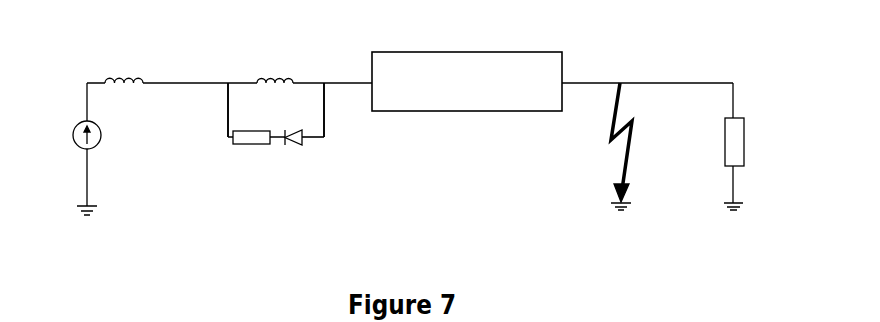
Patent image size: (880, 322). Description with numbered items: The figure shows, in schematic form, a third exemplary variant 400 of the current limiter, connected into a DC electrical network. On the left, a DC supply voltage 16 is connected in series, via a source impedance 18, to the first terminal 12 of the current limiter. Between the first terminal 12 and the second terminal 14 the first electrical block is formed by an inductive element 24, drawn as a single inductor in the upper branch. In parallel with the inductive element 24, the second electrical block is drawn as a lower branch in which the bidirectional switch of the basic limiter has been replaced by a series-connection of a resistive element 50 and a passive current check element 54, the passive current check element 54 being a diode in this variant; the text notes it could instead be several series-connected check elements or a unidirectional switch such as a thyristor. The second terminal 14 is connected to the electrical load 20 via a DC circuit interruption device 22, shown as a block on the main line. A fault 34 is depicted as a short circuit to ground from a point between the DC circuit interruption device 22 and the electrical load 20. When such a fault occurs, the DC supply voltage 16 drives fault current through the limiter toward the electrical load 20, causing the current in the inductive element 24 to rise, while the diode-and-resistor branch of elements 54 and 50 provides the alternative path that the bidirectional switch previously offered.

The DC supply voltage 16 is at (77, 141).
The source impedance 18 is at (125, 74).
The third exemplary variant 400 is at (244, 56).
The inductive element 24 is at (286, 74).
The first terminal 12 is at (223, 88).
The second terminal 14 is at (328, 88).
The resistive element 50 is at (243, 145).
The passive current check element 54 is at (292, 145).
The DC circuit interruption device 22 is at (467, 81).
The fault 34 is at (608, 140).
The electrical load 20 is at (737, 145).